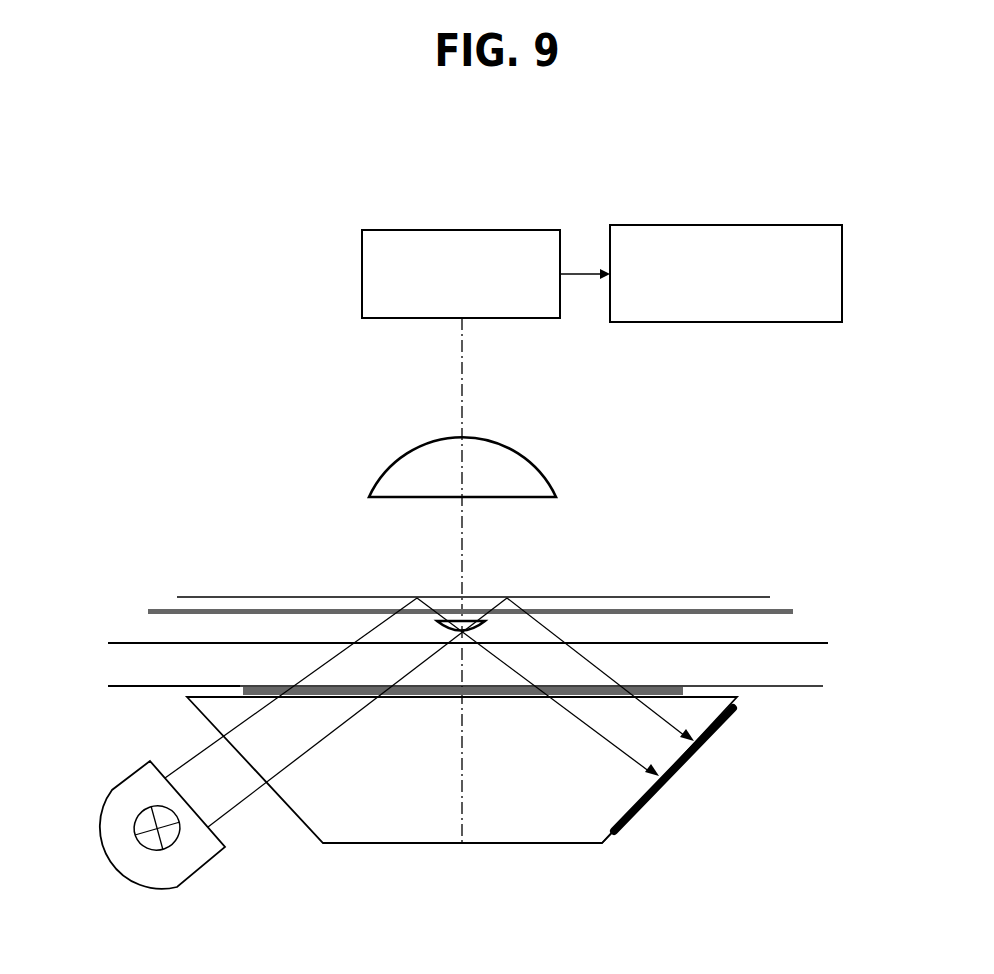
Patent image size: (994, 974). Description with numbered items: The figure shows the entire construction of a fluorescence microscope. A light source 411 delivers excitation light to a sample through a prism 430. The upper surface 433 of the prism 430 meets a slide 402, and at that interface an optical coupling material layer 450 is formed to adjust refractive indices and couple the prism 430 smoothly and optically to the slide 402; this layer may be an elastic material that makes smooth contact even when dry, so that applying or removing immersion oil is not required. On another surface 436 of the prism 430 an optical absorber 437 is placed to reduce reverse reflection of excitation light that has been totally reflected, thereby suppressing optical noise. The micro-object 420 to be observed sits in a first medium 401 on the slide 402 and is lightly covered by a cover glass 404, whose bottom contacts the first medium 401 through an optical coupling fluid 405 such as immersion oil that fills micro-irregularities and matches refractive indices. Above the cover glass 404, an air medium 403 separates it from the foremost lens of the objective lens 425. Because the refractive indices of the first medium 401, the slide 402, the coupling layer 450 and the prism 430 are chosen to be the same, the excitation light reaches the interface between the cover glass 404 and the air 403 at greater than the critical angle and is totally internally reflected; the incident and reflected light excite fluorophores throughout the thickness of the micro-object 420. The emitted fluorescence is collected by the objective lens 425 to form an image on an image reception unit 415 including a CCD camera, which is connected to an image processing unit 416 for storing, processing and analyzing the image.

The first medium 401 is at (772, 632).
The slide 402 is at (763, 660).
The air medium 403 is at (368, 558).
The cover glass 404 is at (648, 608).
The optical coupling fluid 405 is at (257, 610).
The light source 411 is at (128, 780).
The image reception unit 415 is at (362, 282).
The image processing unit 416 is at (742, 322).
The micro-object 420 is at (478, 615).
The objective lens 425 is at (537, 486).
The prism 430 is at (500, 780).
The upper surface of the prism 433 is at (230, 695).
The another surface of the prism 436 is at (608, 835).
The optical absorber 437 is at (693, 755).
The optical coupling material layer 450 is at (651, 690).